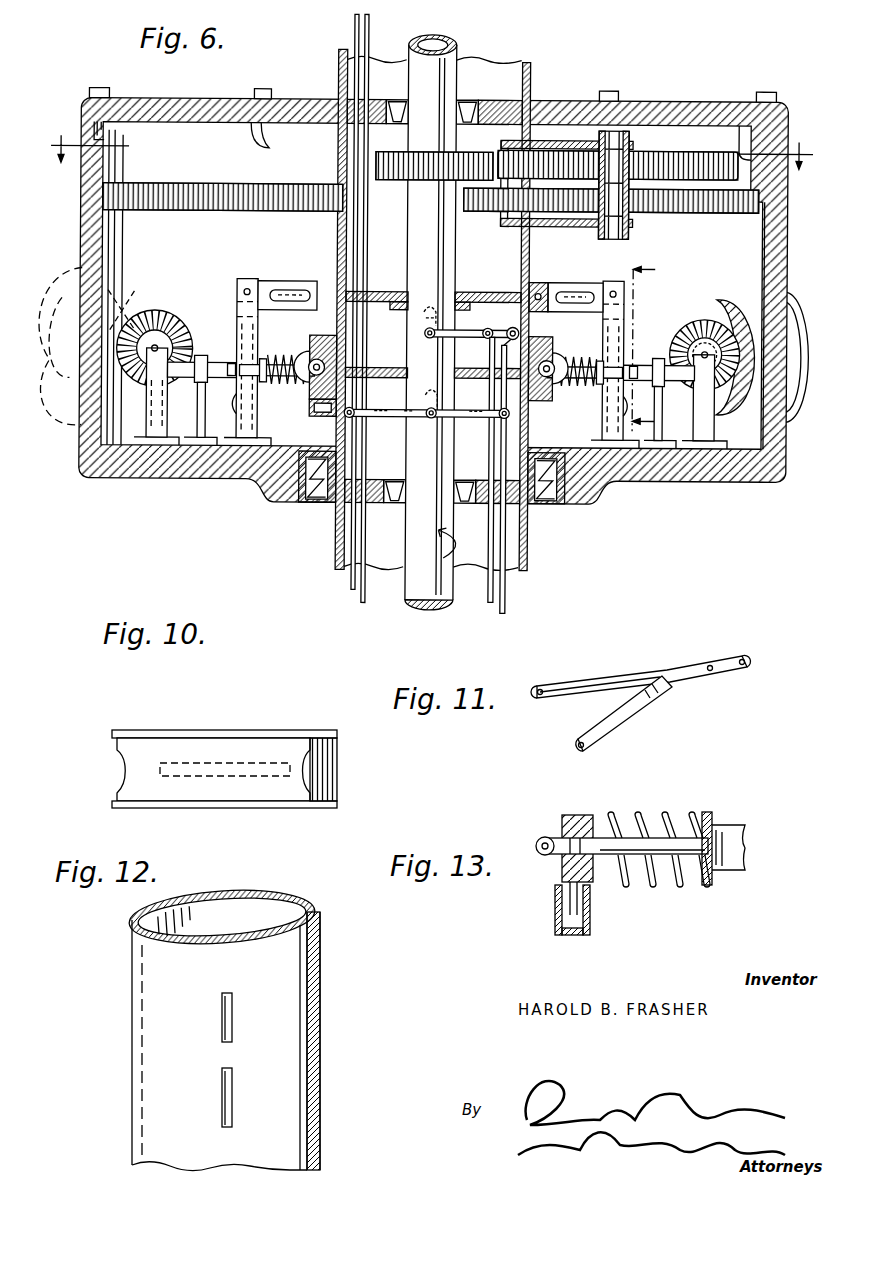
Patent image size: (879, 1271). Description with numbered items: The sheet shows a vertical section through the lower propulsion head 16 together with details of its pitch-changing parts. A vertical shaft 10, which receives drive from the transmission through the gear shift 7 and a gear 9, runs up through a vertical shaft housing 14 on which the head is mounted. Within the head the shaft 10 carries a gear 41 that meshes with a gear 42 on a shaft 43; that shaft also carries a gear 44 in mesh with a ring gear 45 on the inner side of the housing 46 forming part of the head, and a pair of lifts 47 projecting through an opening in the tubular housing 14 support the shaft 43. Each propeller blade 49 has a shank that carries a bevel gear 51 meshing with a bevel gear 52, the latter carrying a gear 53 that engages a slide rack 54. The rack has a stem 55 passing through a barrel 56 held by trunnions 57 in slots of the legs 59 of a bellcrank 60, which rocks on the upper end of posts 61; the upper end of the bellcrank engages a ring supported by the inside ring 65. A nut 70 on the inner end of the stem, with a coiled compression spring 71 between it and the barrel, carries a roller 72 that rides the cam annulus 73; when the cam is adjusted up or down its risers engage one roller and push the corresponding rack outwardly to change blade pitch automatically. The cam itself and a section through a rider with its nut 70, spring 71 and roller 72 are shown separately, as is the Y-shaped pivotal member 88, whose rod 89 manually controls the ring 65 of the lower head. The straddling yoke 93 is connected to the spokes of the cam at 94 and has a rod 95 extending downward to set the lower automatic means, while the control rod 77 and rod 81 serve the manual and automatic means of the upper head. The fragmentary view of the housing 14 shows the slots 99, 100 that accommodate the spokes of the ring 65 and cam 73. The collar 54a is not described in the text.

In FIG. 6, the gear shift 7 is at (432, 142).
In FIG. 6, the gear 9 is at (647, 346).
In FIG. 6, the vertical shaft 10 is at (433, 40).
In FIG. 6, the vertical shaft housing 14 is at (339, 57).
In FIG. 12, the vertical shaft housing 14 is at (320, 955).
In FIG. 6, the lower propulsion head 16 is at (211, 99).
In FIG. 6, the gear 41 is at (392, 160).
In FIG. 6, the gear 42 is at (696, 158).
In FIG. 6, the shaft 43 is at (614, 138).
In FIG. 6, the gear 44 is at (716, 212).
In FIG. 6, the ring gear 45 is at (228, 192).
In FIG. 6, the housing 46 is at (770, 228).
In FIG. 6, the lifts 47 is at (630, 225).
In FIG. 6, the propeller blade 49 is at (812, 288).
In FIG. 6, the bevel gear 51 is at (716, 415).
In FIG. 6, the bevel gear 52 is at (692, 324).
In FIG. 6, the gear 53 is at (703, 332).
In FIG. 6, the slide rack 54 is at (660, 355).
In FIG. 6, the collar 54a is at (665, 398).
In FIG. 6, the stem 55 is at (550, 350).
In FIG. 13, the stem 55 is at (622, 846).
In FIG. 6, the barrel 56 is at (636, 368).
In FIG. 6, the trunnions 57 is at (600, 368).
In FIG. 6, the legs 59 is at (603, 410).
In FIG. 6, the bellcrank 60 is at (588, 283).
In FIG. 6, the posts 61 is at (240, 280).
In FIG. 6, the inside ring 65 is at (537, 280).
In FIG. 6, the nut 70 is at (564, 360).
In FIG. 13, the nut 70 is at (562, 815).
In FIG. 6, the coiled compression spring 71 is at (580, 356).
In FIG. 13, the coiled compression spring 71 is at (655, 812).
In FIG. 6, the roller 72 is at (563, 398).
In FIG. 13, the roller 72 is at (553, 915).
In FIG. 6, the cam annulus 73 is at (323, 418).
In FIG. 10, the cam annulus 73 is at (222, 752).
In FIG. 6, the control rod 77 is at (353, 29).
In FIG. 6, the rod 81 is at (368, 25).
In FIG. 6, the Y-shaped pivotal member 88 is at (470, 331).
In FIG. 11, the Y-shaped pivotal member 88 is at (688, 676).
In FIG. 6, the rod 89 is at (490, 605).
In FIG. 6, the straddling yoke 93 is at (412, 418).
In FIG. 6, the connection 94 is at (432, 420).
In FIG. 6, the rod 95 is at (508, 607).
In FIG. 12, the slot 99 is at (232, 1030).
In FIG. 12, the slot 100 is at (232, 1110).